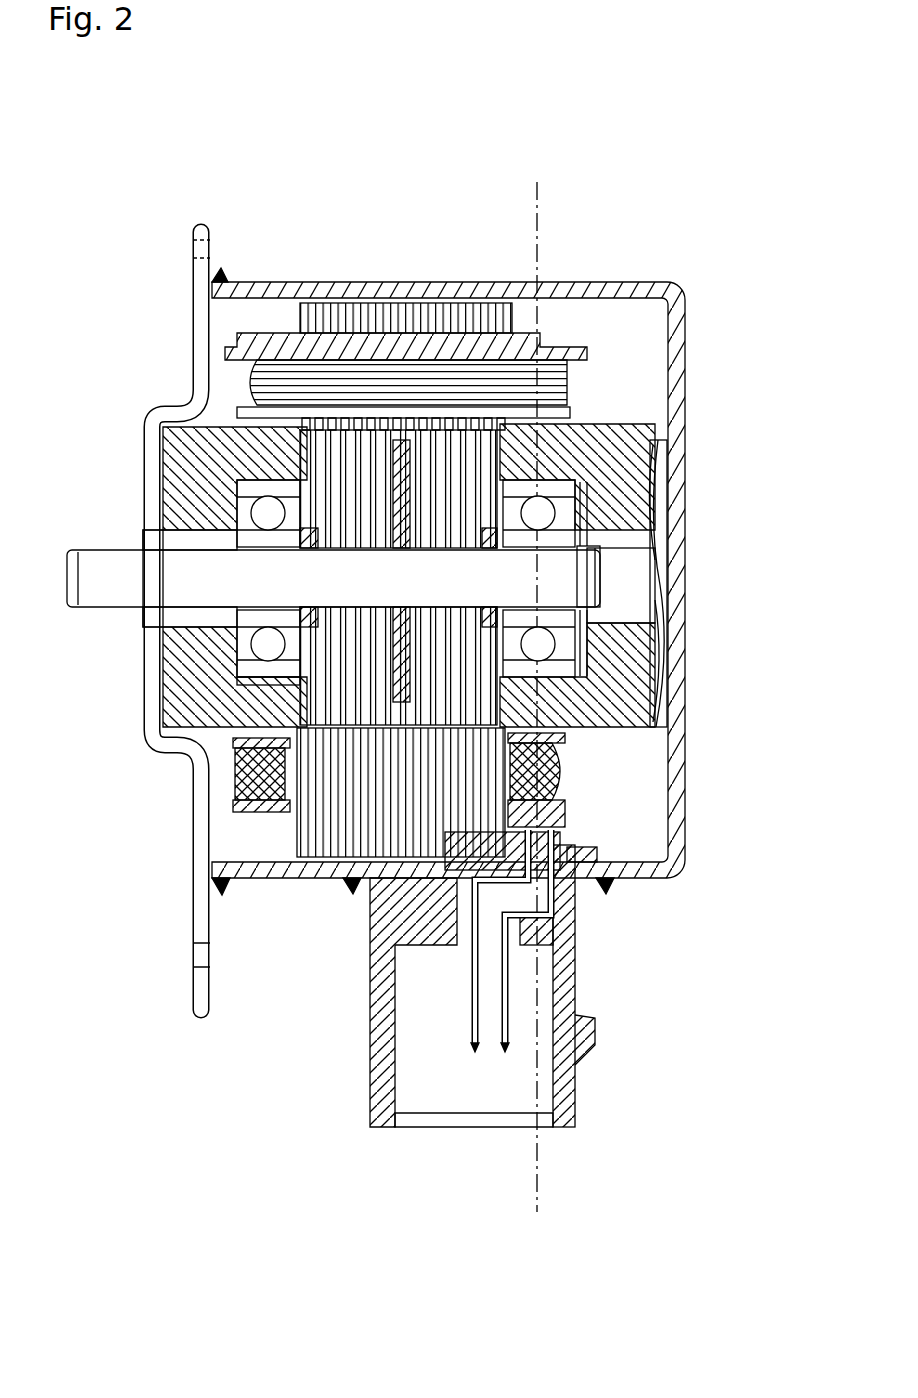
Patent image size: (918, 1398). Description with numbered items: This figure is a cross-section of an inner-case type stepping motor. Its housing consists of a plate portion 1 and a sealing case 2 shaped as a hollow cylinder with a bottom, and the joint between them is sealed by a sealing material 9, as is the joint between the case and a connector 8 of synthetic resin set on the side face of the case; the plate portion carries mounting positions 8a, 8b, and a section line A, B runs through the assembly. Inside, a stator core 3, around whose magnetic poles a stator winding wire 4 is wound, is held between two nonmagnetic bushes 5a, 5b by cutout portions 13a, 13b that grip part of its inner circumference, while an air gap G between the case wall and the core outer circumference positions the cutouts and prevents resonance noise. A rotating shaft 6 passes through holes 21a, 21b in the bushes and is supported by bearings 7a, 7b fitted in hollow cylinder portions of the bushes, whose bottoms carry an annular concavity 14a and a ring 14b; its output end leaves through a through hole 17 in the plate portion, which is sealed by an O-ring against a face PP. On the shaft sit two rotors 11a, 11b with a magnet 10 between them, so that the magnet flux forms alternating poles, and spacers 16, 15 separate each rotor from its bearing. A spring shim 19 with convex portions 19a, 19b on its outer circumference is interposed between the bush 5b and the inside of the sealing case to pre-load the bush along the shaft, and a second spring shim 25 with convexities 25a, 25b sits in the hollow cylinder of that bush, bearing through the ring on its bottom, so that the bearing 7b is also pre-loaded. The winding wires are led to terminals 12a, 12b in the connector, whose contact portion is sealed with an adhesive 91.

The plate portion 1 is at (195, 322).
The sealing case 2 is at (365, 465).
The stator core 3 is at (455, 470).
The stator winding wire 4 is at (322, 298).
The bush 5a is at (190, 440).
The bush 5b is at (605, 432).
The rotating shaft 6 is at (632, 575).
The bearing 7a is at (245, 745).
The bearing 7b is at (555, 772).
The connector 8 is at (373, 1092).
The upper mounting hole 8a is at (197, 240).
The lower mounting hole 8b is at (197, 955).
The sealing material 9 is at (222, 270).
The magnet 10 is at (388, 390).
The rotor 11a is at (245, 388).
The rotor 11b is at (570, 385).
The terminal 12a is at (475, 1050).
The terminal 12b is at (510, 1045).
The cutout portion 13a is at (288, 440).
The cutout portion 13b is at (560, 455).
The annular concavity 14a is at (145, 722).
The ring 14b is at (605, 617).
The spacer 15 is at (592, 870).
The spacer 16 is at (247, 667).
The through hole 17 is at (153, 538).
The spring shim 19 is at (668, 553).
The convexity portion 19a is at (655, 470).
The convexity portion 19b is at (660, 690).
The through hole 21a is at (173, 617).
The through hole 21b is at (577, 578).
The spring shim 25 is at (672, 760).
The convexity portion 25a is at (620, 515).
The convexity portion 25b is at (565, 668).
The adhesive 91 is at (470, 1040).
The air gap G is at (283, 297).
The face PP is at (140, 738).
The section line A is at (565, 172).
The section line B is at (537, 1202).